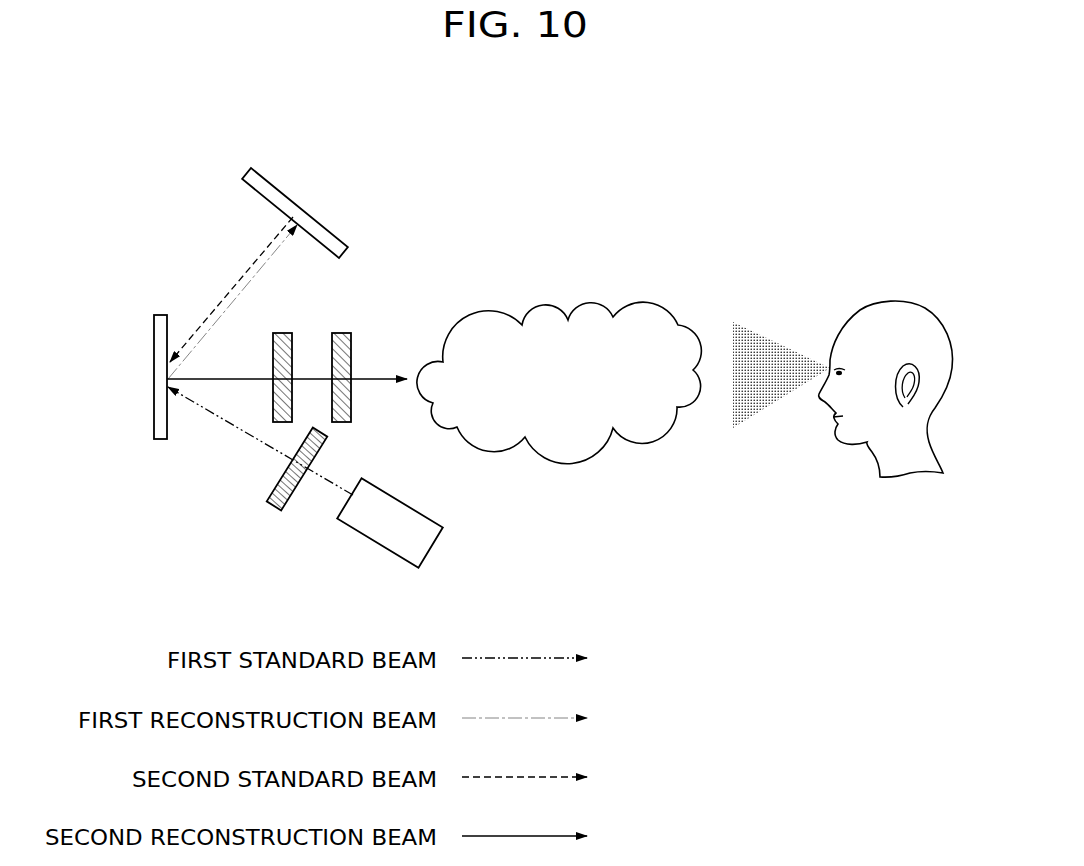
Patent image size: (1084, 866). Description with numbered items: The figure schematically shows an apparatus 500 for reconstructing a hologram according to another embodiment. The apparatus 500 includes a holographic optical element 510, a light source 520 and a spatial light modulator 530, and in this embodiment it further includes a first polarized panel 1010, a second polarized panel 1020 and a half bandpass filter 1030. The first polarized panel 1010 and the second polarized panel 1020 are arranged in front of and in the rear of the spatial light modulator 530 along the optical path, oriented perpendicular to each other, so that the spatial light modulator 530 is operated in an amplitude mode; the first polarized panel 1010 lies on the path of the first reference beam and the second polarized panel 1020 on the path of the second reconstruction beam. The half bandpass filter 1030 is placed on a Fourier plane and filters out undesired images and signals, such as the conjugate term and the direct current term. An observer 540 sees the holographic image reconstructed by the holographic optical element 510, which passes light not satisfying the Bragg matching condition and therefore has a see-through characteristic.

The apparatus for reconstructing a hologram 500 is at (630, 164).
The holographic optical element 510 is at (160, 314).
The light source 520 is at (382, 551).
The spatial light modulator 530 is at (289, 196).
The observer 540 is at (892, 298).
The first polarized panel 1010 is at (275, 510).
The second polarized panel 1020 is at (288, 333).
The half bandpass filter 1030 is at (345, 333).